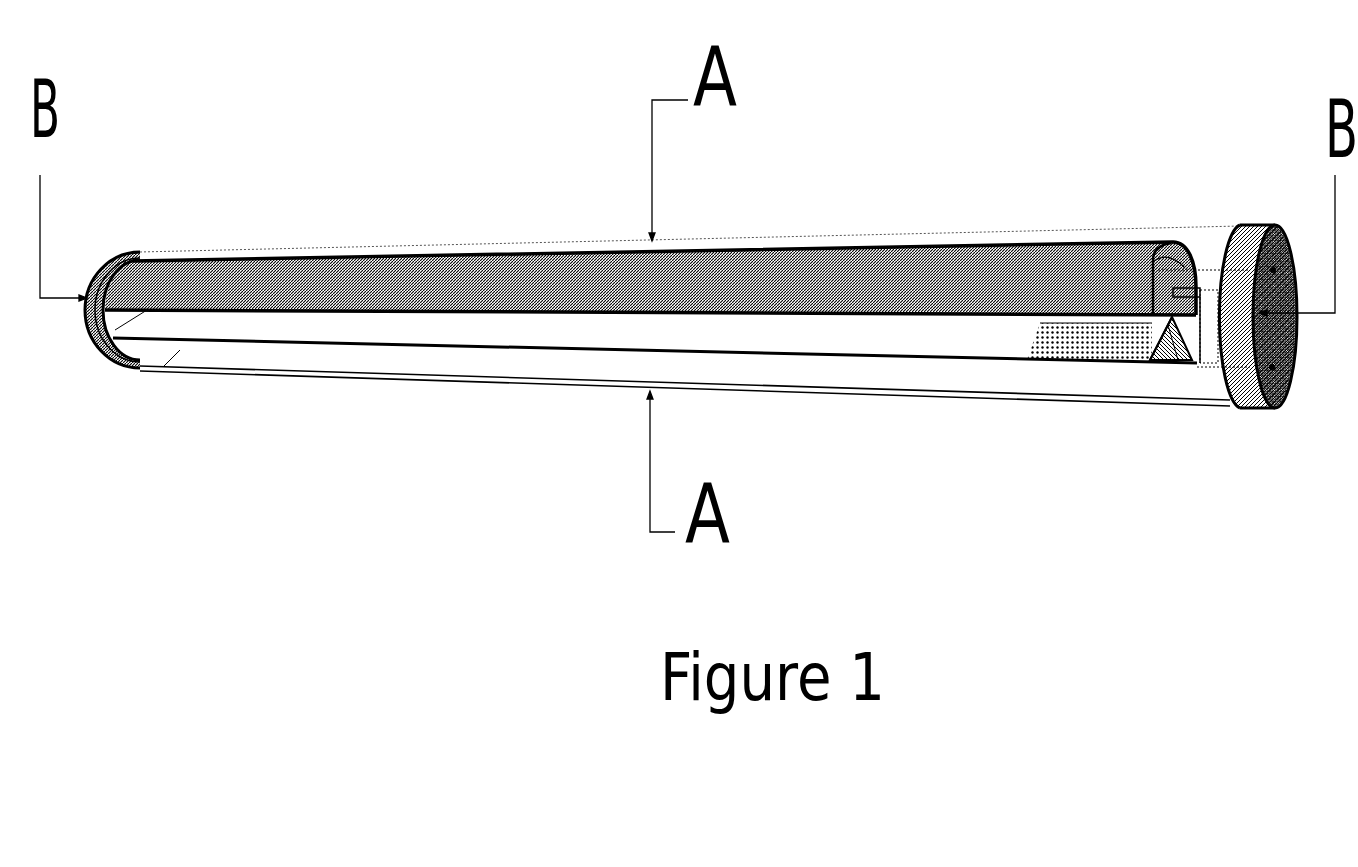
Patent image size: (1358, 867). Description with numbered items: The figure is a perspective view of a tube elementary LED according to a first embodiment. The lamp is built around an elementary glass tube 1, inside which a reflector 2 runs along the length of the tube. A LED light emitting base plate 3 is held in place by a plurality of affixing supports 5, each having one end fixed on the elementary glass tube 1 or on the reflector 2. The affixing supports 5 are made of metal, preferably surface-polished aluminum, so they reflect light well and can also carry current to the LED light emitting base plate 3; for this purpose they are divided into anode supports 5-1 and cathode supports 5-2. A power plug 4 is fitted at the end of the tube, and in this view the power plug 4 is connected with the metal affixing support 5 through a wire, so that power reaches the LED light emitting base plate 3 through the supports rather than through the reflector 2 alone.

The elementary glass tube 1 is at (1022, 228).
The reflector 2 is at (1137, 252).
The LED light emitting base plate 3 is at (1078, 352).
The power plug 4 is at (1280, 223).
The affixing support 5 is at (1254, 397).
The anode support 5-1 is at (1170, 325).
The cathode support 5-2 is at (1173, 297).